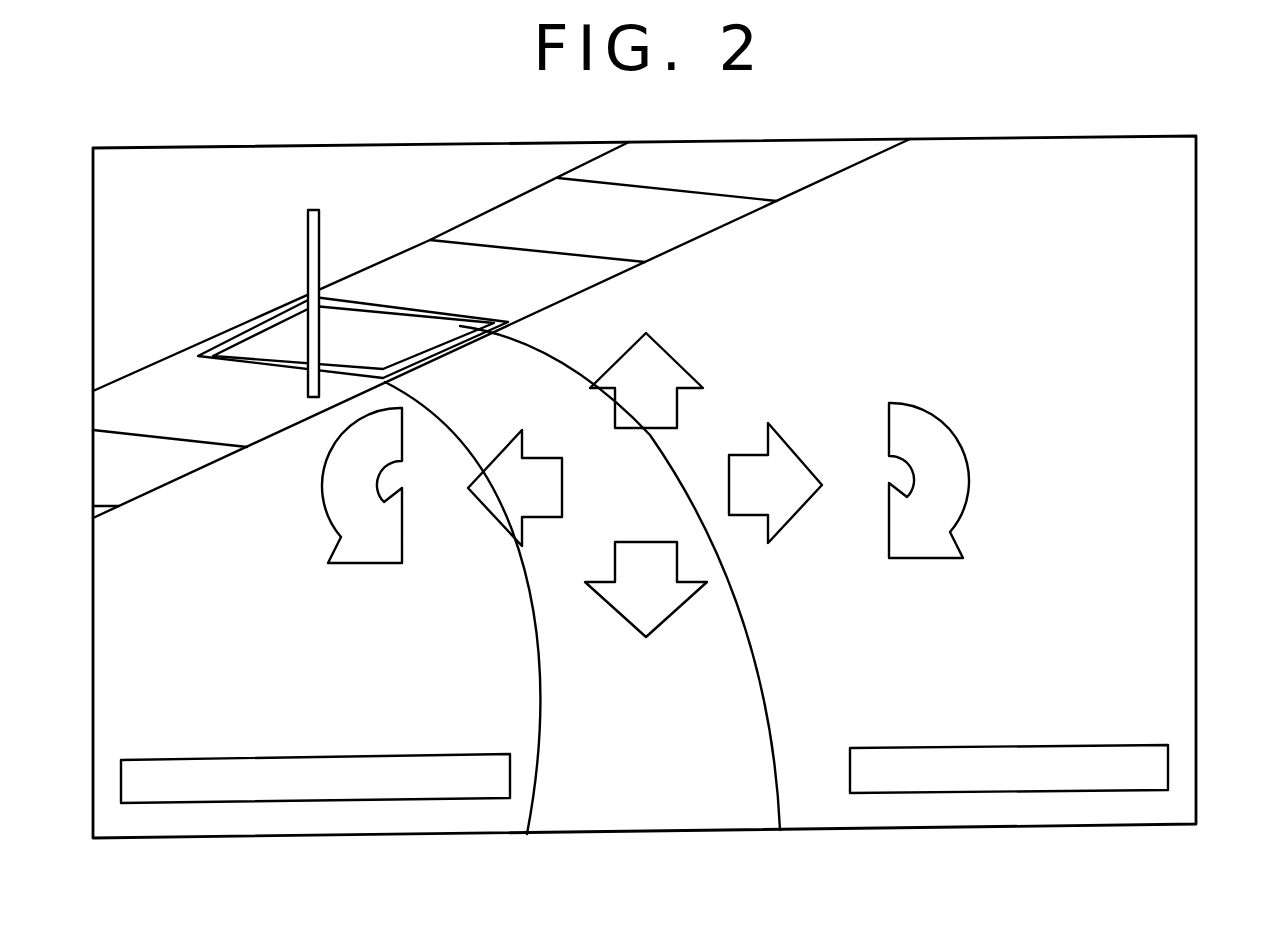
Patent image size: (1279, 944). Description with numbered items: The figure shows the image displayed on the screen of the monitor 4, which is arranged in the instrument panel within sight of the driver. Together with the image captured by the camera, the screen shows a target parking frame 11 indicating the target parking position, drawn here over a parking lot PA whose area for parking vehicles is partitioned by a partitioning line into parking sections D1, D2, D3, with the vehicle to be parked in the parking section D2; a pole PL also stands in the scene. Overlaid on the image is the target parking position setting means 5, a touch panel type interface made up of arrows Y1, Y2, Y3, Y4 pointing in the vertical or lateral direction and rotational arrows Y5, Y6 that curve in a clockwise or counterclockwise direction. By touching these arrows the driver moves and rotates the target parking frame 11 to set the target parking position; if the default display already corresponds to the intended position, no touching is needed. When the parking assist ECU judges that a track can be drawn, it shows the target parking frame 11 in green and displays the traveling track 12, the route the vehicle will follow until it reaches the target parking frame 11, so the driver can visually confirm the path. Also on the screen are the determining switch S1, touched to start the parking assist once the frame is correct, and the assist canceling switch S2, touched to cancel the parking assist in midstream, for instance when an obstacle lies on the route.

The monitor 4 is at (1196, 504).
The target parking position setting means 5 is at (925, 350).
The target parking frame 11 is at (450, 341).
The traveling track 12 is at (772, 703).
The parking section D1 is at (403, 251).
The parking section D2 is at (247, 330).
The parking section D3 is at (145, 367).
The parking lot PA is at (705, 258).
The pole PL is at (307, 240).
The arrow Y1 is at (675, 361).
The arrow Y2 is at (677, 610).
The arrow Y3 is at (492, 514).
The arrow Y4 is at (793, 517).
The rotational arrow Y5 is at (323, 490).
The rotational arrow Y6 is at (970, 481).
The determining switch S1 is at (1107, 792).
The assist canceling switch S2 is at (448, 800).